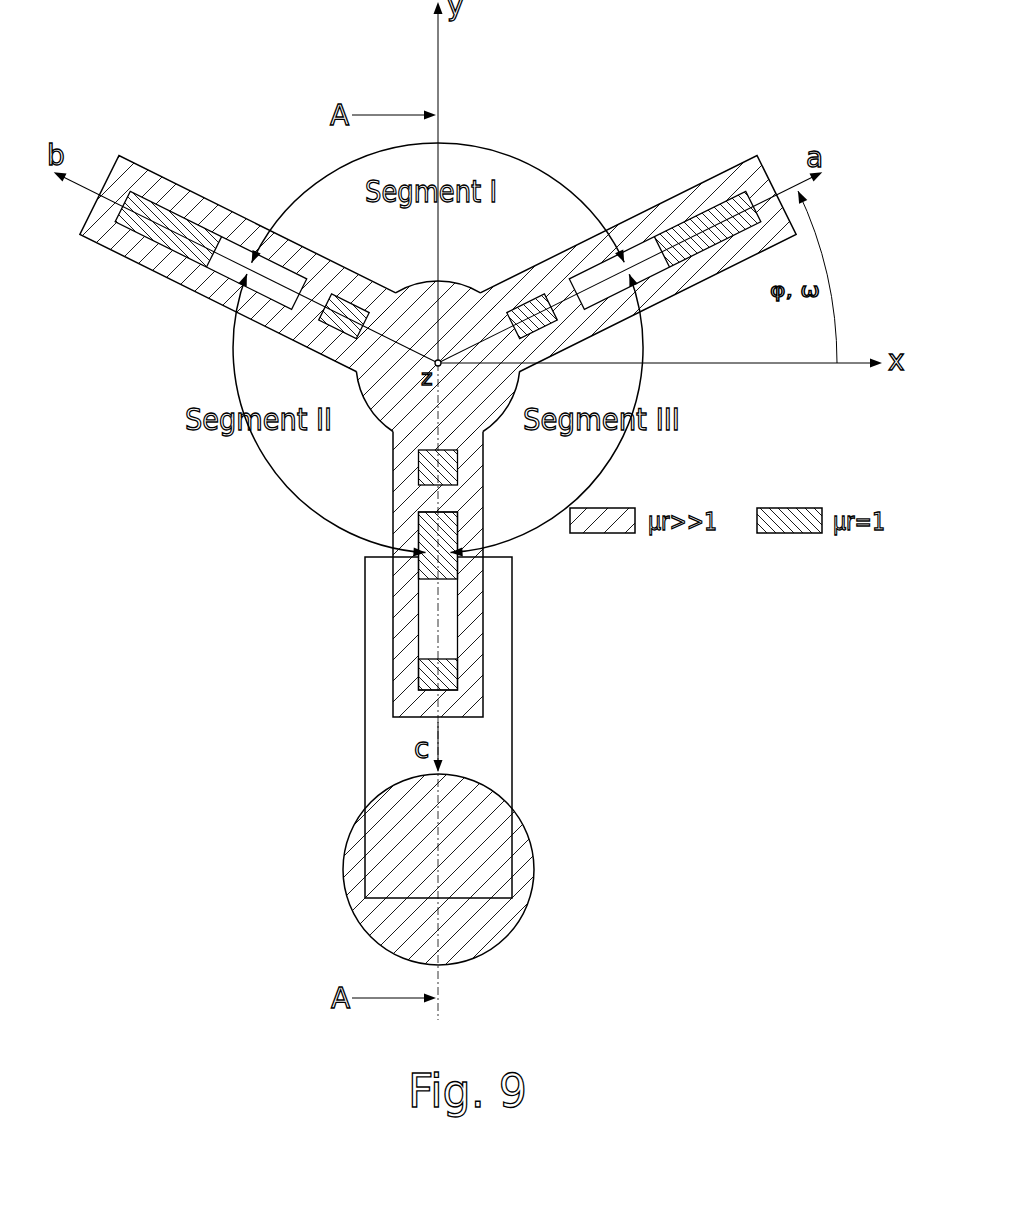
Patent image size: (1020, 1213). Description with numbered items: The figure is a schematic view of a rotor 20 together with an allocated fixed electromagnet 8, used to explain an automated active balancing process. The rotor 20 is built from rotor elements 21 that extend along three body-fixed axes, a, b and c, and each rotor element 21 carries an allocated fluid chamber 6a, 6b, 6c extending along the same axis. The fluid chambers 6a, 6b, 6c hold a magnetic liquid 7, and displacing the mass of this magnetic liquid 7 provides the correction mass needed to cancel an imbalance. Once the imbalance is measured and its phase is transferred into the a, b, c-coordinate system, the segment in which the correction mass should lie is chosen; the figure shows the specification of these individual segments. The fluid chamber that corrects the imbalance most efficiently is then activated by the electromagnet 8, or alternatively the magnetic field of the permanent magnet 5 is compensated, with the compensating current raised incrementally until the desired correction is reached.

The permanent magnet 5 is at (520, 297).
The fluid chamber 6a is at (725, 213).
The fluid chamber 6b is at (222, 263).
The fluid chamber 6c is at (443, 623).
The magnetic liquid 7 is at (150, 208).
The electromagnet 8 is at (525, 865).
The rotor 20 is at (412, 450).
The rotor element 21 is at (237, 227).